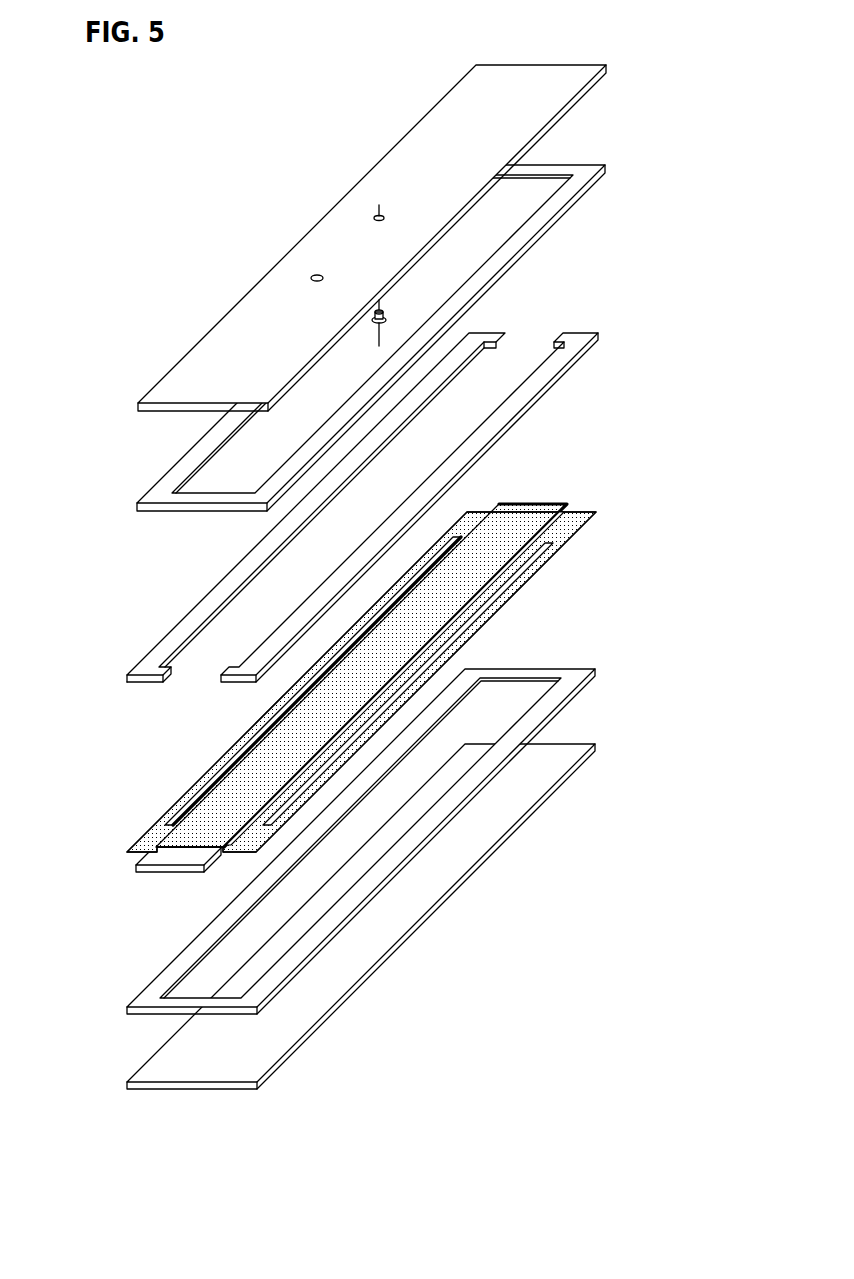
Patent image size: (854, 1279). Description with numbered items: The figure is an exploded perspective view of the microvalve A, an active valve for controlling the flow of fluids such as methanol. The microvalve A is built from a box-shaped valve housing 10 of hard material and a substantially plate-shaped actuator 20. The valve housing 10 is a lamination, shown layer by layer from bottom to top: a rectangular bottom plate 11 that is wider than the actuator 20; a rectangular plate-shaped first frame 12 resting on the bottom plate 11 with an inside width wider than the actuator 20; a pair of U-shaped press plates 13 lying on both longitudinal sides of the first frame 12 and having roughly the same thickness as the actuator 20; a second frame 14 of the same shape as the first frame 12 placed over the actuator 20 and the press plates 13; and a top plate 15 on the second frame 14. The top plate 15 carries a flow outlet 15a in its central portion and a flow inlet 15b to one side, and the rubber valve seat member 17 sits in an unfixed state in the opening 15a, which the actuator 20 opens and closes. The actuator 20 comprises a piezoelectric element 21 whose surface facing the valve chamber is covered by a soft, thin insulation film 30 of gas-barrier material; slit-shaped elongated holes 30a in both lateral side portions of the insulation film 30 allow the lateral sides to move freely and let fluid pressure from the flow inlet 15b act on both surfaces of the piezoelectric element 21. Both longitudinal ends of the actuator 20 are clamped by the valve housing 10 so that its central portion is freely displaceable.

The valve housing 10 is at (667, 71).
The bottom plate 11 is at (160, 1063).
The first frame 12 is at (168, 973).
The press plates 13 is at (198, 606).
The second frame 14 is at (182, 465).
The top plate 15 is at (240, 313).
The flow outlet 15a is at (376, 216).
The flow inlet 15b is at (313, 277).
The valve seat member 17 is at (374, 326).
The actuator 20 is at (556, 492).
The piezoelectric element 21 is at (162, 864).
The insulation film 30 is at (152, 823).
The elongated holes 30a is at (520, 578).
The microvalve A is at (85, 310).